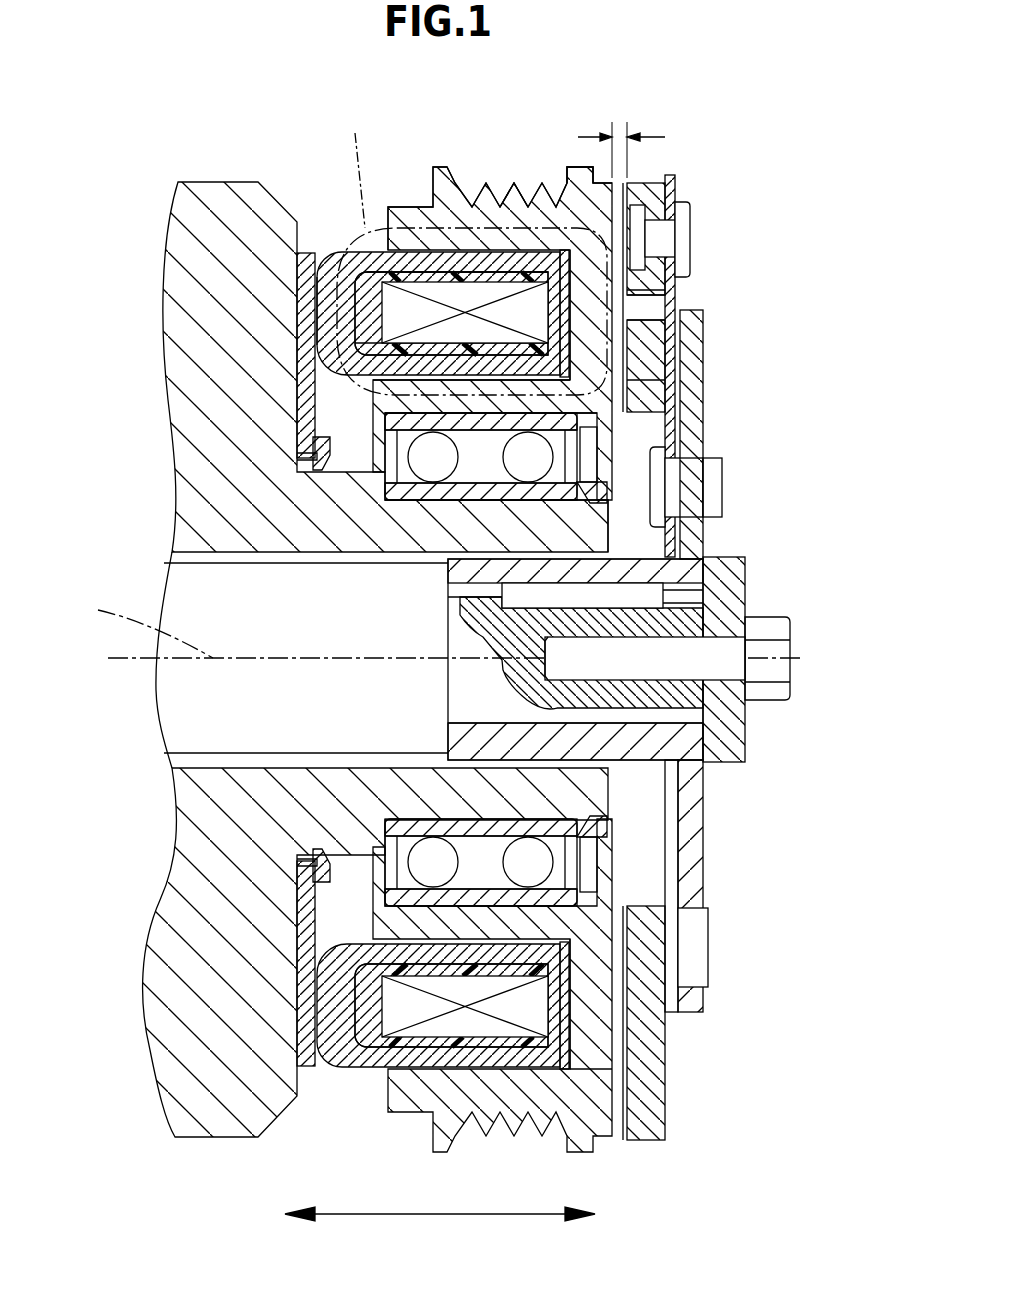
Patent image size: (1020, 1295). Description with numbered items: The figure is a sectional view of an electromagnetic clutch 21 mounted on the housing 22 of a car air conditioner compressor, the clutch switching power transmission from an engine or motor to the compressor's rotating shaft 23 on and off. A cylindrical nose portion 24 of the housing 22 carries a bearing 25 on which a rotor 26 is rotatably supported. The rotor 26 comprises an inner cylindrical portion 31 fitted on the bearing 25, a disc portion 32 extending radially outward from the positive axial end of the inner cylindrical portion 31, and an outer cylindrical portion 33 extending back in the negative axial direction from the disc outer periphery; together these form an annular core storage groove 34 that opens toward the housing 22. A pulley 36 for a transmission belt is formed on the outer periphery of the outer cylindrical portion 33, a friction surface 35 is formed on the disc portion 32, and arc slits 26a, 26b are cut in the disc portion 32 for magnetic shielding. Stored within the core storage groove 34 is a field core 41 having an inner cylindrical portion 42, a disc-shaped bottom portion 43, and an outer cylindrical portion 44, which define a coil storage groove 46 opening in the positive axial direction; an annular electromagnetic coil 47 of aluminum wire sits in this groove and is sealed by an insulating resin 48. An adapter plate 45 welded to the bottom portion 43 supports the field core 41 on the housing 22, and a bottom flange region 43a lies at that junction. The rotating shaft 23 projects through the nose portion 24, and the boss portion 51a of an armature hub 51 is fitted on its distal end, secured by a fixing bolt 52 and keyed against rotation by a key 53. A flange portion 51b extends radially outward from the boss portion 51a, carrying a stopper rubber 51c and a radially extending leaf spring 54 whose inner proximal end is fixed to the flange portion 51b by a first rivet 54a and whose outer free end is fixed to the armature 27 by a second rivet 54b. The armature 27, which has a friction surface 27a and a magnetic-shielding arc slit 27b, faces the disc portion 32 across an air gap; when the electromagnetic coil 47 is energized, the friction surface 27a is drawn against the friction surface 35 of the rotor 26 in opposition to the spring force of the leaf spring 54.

The electromagnetic clutch 21 is at (124, 134).
The housing 22 is at (200, 180).
The rotating shaft 23 is at (205, 768).
The cylindrical nose portion 24 is at (560, 522).
The bearing 25 is at (322, 865).
The rotor 26 is at (458, 612).
The arc slit 26a is at (592, 978).
The arc slit 26b is at (592, 1063).
The armature 27 is at (719, 642).
The friction surface 27a is at (632, 410).
The arc slit 27b is at (650, 312).
The inner cylindrical portion 31 is at (393, 393).
The disc portion 32 is at (600, 325).
The outer cylindrical portion 33 is at (400, 200).
The core storage groove 34 is at (512, 235).
The friction surface 35 is at (640, 300).
The pulley 36 is at (530, 183).
The field core 41 is at (317, 586).
The inner cylindrical portion 42 is at (445, 450).
The bottom portion 43 is at (309, 659).
The bobbin flange 43a is at (400, 350).
The outer cylindrical portion 44 is at (438, 282).
The adapter plate 45 is at (305, 270).
The coil storage groove 46 is at (564, 260).
The electromagnetic coil 47 is at (340, 296).
The insulating resin 48 is at (471, 268).
The armature hub 51 is at (644, 661).
The boss portion 51a is at (645, 762).
The flange portion 51b is at (690, 372).
The stopper rubber 51c is at (710, 930).
The fixing bolt 52 is at (778, 684).
The key 53 is at (690, 592).
The leaf spring 54 is at (705, 592).
The first rivet 54a is at (722, 490).
The second rivet 54b is at (692, 235).